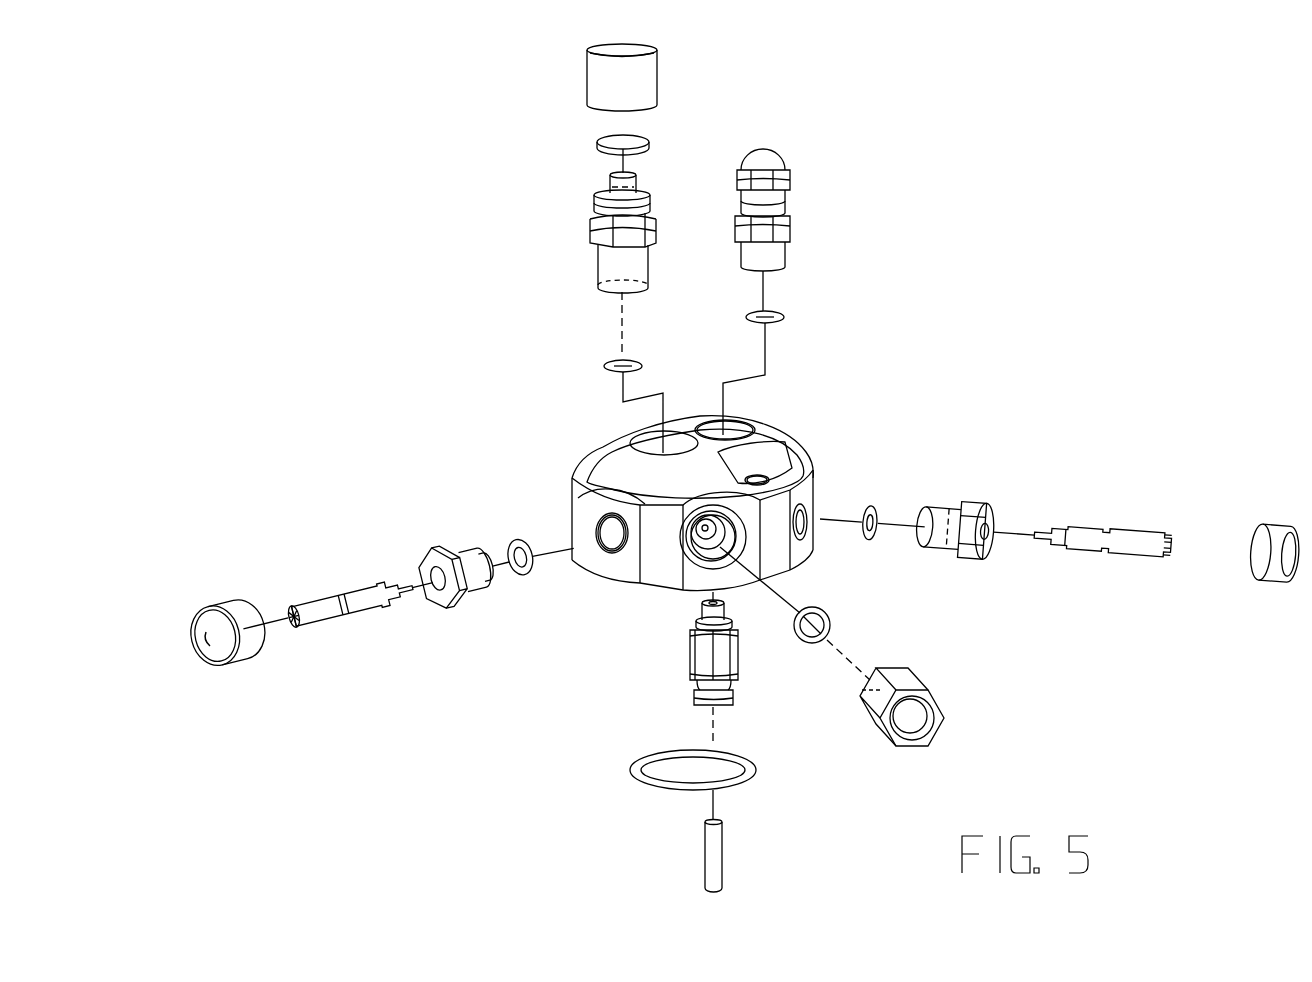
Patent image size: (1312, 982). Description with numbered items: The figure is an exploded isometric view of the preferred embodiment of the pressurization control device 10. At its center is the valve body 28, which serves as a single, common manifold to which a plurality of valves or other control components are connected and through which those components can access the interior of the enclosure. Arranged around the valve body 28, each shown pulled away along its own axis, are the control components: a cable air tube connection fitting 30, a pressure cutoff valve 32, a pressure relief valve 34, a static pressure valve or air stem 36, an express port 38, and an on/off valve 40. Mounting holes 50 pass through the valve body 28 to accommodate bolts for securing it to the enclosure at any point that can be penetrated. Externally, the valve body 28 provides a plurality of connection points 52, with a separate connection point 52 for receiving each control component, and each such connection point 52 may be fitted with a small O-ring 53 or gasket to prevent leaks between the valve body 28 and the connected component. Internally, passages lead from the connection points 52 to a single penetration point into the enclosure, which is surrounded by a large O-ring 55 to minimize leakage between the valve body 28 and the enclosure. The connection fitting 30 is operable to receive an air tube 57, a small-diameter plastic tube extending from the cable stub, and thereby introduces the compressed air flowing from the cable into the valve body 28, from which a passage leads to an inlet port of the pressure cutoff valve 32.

The pressurization control device 10 is at (1159, 166).
The valve body 28 is at (614, 503).
The cable air tube connection fitting 30 is at (645, 706).
The pressure cutoff valve 32 is at (1059, 597).
The pressure relief valve 34 is at (975, 688).
The static pressure valve 36 is at (818, 257).
The express port 38 is at (538, 248).
The on/off valve 40 is at (364, 577).
The mounting holes 50 is at (808, 442).
The connection points 52 is at (675, 501).
The small O-ring 53 is at (745, 316).
The large O-ring 55 is at (658, 780).
The air tube 57 is at (781, 862).